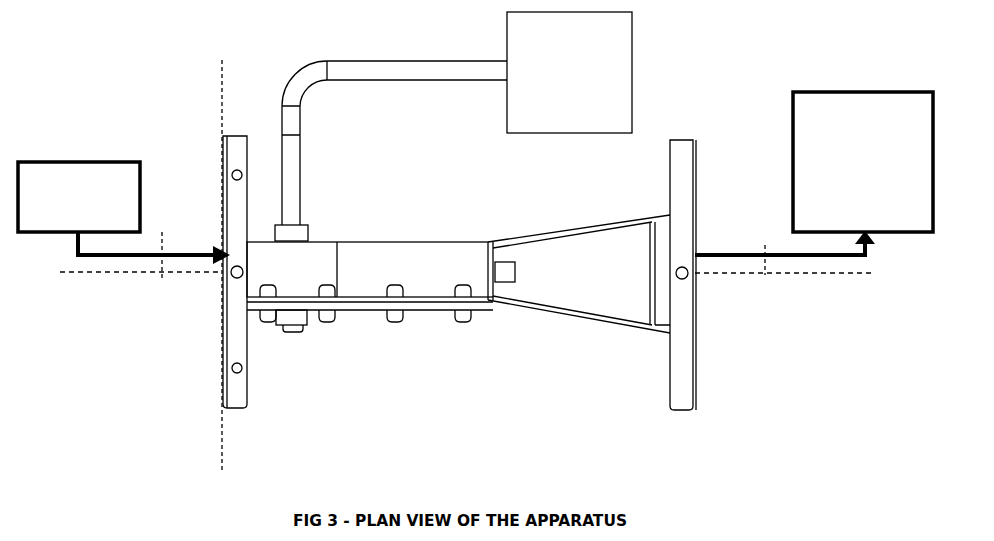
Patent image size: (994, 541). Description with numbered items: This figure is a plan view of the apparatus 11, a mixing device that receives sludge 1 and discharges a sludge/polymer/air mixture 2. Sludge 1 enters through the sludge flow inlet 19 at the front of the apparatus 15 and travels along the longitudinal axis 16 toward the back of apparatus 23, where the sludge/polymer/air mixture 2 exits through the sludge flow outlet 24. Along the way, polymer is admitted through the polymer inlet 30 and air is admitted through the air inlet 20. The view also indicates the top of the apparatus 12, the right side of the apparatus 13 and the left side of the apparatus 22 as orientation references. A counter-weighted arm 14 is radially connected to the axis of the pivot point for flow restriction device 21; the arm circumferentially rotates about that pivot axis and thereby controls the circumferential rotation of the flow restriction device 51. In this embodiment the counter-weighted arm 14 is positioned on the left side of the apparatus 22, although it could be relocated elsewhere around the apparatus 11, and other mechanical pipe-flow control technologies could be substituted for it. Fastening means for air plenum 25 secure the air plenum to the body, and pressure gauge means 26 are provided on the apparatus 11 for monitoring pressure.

The sludge 1 is at (102, 161).
The sludge/polymer/air mixture 2 is at (831, 93).
The apparatus 11 is at (222, 140).
The top of the apparatus 12 is at (477, 285).
The right side of the apparatus 13 is at (608, 322).
The counter-weighted arm 14 is at (617, 66).
The front of the apparatus 15 is at (222, 350).
The longitudinal axis 16 is at (467, 265).
The sludge flow inlet 19 is at (222, 272).
The air inlet 20 is at (505, 262).
The pivot point for flow restriction device 21 is at (305, 228).
The left side of the apparatus 22 is at (425, 240).
The back of apparatus 23 is at (697, 183).
The sludge flow outlet 24 is at (690, 278).
The fastening means for air plenum 25 is at (465, 322).
The pressure gauge means 26 is at (230, 262).
The polymer inlet 30 is at (237, 170).
The flow restriction device 51 is at (420, 310).